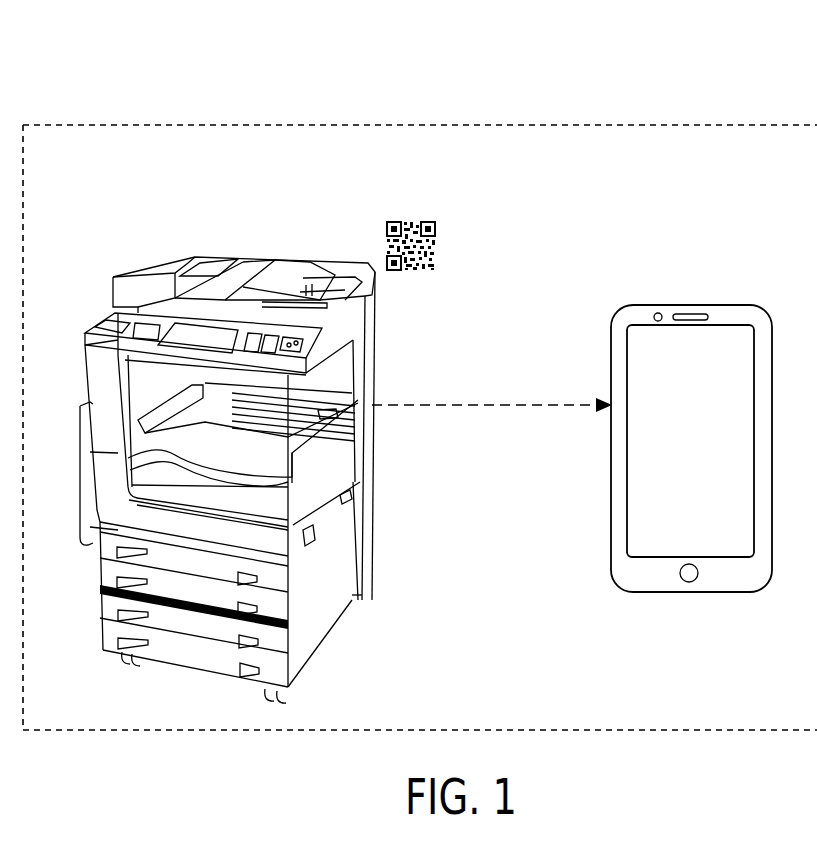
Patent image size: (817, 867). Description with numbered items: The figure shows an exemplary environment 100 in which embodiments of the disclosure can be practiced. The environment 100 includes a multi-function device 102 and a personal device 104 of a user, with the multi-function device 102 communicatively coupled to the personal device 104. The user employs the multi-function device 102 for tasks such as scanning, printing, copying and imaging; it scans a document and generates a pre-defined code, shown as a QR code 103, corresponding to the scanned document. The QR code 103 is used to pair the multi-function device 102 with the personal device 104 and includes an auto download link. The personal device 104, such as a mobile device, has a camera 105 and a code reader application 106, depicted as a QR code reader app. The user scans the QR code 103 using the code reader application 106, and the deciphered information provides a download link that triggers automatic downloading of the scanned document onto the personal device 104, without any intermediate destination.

The environment 100 is at (182, 98).
The multi-function device 102 is at (221, 255).
The QR code 103 is at (409, 222).
The personal device 104 is at (697, 409).
The camera 105 is at (656, 312).
The code reader application 106 is at (683, 400).